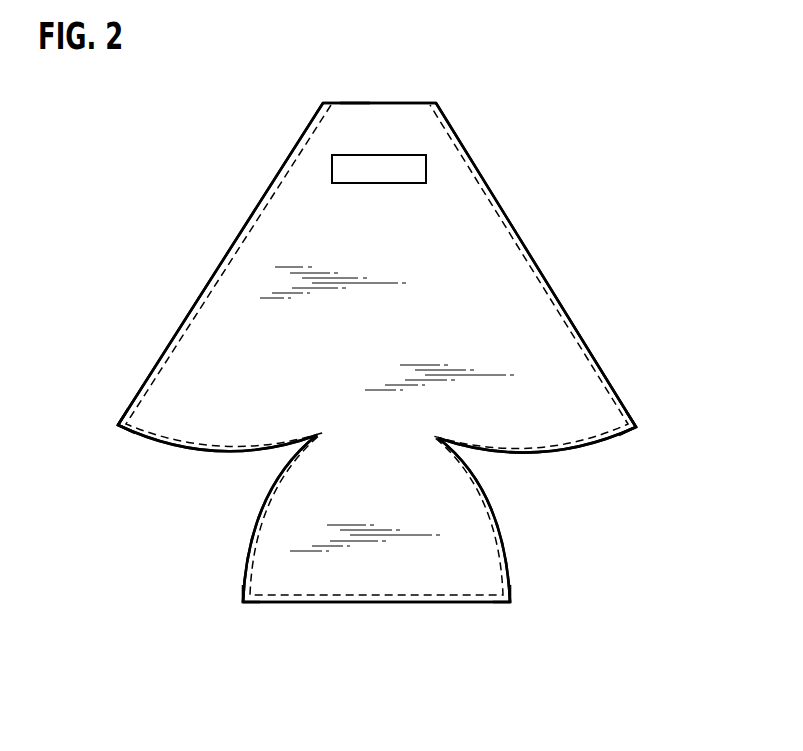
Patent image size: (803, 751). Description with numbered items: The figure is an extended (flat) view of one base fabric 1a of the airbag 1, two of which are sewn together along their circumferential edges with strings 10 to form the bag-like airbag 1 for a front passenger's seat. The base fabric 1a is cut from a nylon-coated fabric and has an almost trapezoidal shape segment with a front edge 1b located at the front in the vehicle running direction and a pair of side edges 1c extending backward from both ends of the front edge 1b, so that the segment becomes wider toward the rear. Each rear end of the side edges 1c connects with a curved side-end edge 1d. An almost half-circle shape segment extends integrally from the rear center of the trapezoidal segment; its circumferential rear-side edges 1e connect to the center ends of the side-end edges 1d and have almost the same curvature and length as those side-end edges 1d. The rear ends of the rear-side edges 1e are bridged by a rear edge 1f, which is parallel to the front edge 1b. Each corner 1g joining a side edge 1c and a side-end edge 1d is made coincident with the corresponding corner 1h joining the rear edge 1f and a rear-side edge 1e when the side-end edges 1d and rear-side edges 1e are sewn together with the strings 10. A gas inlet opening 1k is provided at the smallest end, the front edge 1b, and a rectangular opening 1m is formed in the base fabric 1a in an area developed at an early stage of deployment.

The airbag 1 is at (542, 254).
The strings 10 is at (262, 213).
The base fabric 1a is at (227, 311).
The front edge 1b is at (404, 102).
The side edges 1c is at (165, 348).
The side-end edges 1d is at (203, 452).
The rear-side edges 1e is at (248, 550).
The rear edge 1f is at (385, 605).
The corner 1g is at (118, 428).
The corner 1h is at (243, 605).
The gas inlet opening 1k is at (354, 102).
The rectangular opening 1m is at (413, 167).